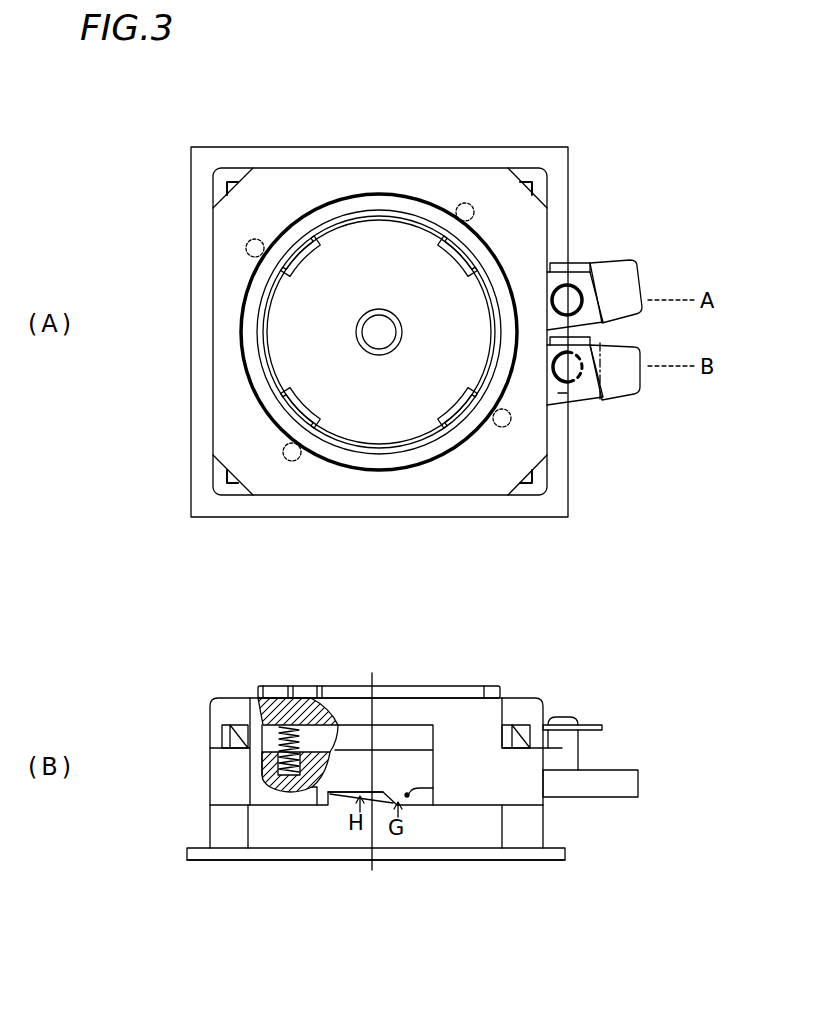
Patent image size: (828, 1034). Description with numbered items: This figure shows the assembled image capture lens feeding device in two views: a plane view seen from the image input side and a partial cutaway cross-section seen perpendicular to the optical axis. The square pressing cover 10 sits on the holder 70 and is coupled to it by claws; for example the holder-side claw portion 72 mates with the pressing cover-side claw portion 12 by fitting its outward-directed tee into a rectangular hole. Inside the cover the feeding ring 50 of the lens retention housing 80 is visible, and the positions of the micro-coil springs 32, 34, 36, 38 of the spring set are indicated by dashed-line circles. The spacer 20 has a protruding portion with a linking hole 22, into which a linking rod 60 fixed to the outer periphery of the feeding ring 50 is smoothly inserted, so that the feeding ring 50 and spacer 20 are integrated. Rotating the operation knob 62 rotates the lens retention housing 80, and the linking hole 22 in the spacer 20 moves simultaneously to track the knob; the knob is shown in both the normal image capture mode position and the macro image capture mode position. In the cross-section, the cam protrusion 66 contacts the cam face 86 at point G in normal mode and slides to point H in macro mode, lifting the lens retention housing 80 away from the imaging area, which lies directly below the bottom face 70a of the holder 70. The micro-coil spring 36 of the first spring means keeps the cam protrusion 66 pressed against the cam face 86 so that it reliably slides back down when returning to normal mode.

The pressing cover 10 is at (428, 180).
The pressing cover-side claw portion 12 is at (399, 363).
The spacer 20 is at (355, 723).
The linking hole 22 is at (580, 282).
The micro-coil spring 32 is at (476, 211).
The micro-coil spring 34 is at (258, 240).
The micro-coil spring 36 is at (292, 461).
The micro-coil spring 38 is at (502, 428).
The feeding ring 50 is at (312, 213).
The linking rod 60 is at (575, 768).
The operation knob 62 is at (630, 283).
The cam protrusion 66 is at (433, 788).
The holder 70 is at (215, 822).
The bottom face 70a is at (257, 868).
The holder-side claw portion 72 is at (527, 485).
The lens retention housing 80 is at (487, 688).
The cam face 86 is at (338, 795).